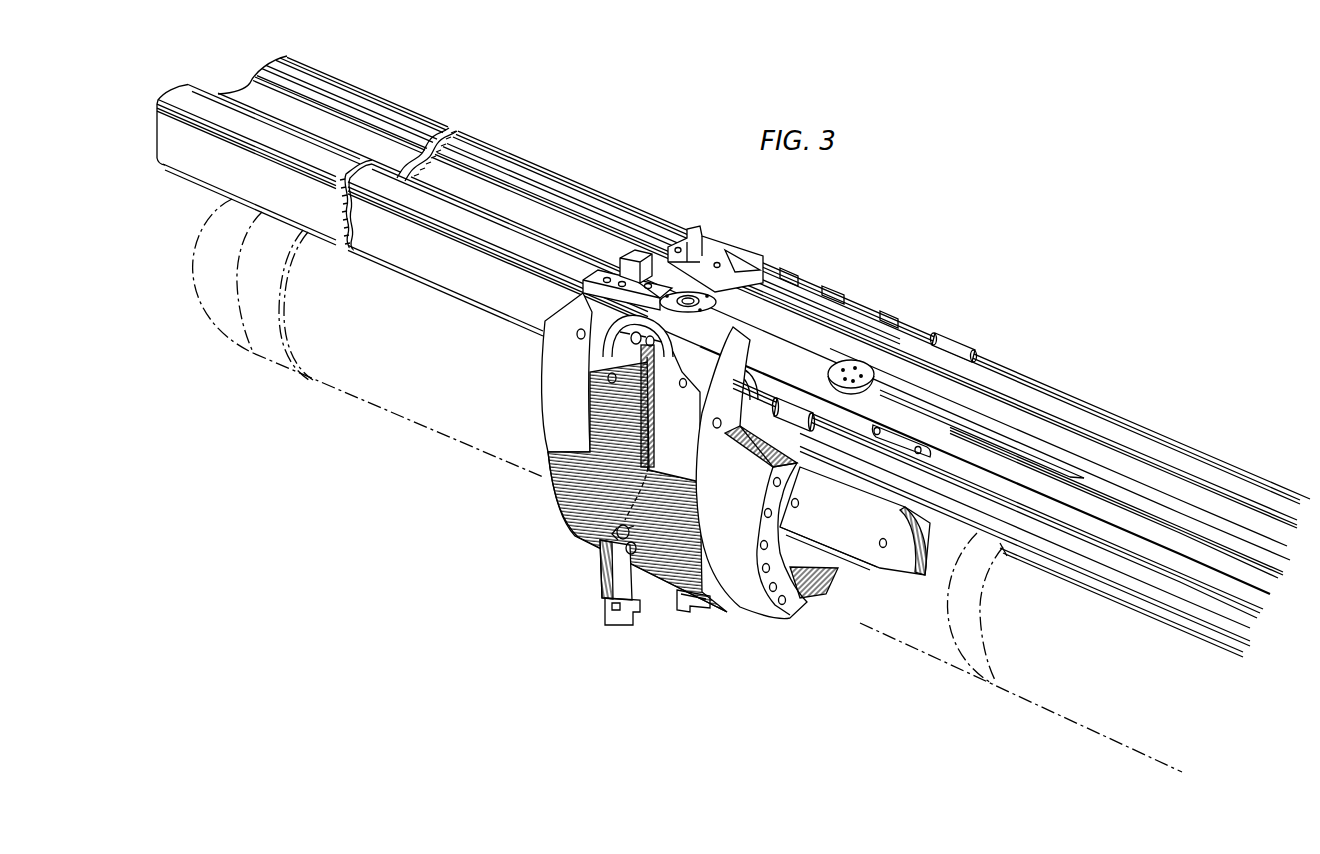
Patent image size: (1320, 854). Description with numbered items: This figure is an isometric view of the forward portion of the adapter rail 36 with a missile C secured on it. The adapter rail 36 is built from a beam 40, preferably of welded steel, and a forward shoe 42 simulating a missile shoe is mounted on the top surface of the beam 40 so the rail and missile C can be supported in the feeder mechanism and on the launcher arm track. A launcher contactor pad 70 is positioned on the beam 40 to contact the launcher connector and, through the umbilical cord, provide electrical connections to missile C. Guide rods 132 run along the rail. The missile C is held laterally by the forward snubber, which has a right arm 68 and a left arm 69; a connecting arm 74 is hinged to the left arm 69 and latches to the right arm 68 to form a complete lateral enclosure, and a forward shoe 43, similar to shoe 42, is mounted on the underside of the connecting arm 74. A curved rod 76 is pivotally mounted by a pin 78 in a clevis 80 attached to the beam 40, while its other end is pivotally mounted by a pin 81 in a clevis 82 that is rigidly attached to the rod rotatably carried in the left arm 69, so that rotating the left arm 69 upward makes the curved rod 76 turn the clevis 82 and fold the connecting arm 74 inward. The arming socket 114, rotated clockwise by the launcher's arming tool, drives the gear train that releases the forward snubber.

The beam 40 is at (387, 107).
The adapter rail 36 is at (552, 174).
The forward shoe 42 is at (638, 253).
The arming socket 114 is at (716, 294).
The clevis 80 is at (667, 334).
The pin 78 is at (667, 337).
The launcher contactor pad 70 is at (852, 364).
The curved rod 76 is at (654, 402).
The guide rod 132 is at (1000, 363).
The left arm 69 is at (583, 495).
The clevis 82 is at (617, 535).
The pin 81 is at (630, 553).
The forward shoe 43 is at (637, 617).
The connecting arm 74 is at (813, 593).
The right arm 68 is at (925, 527).
The missile C is at (687, 485).